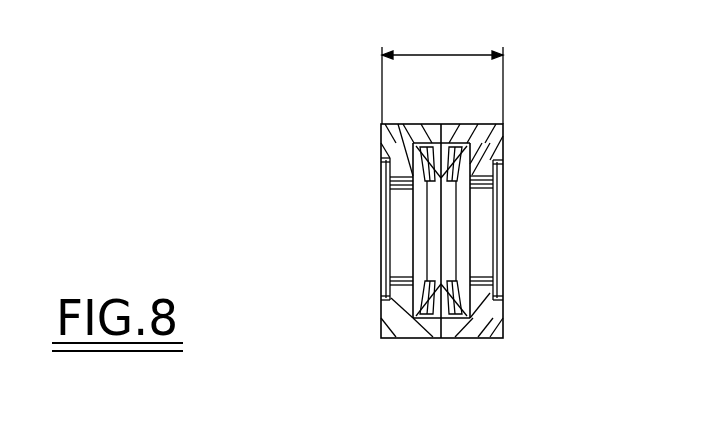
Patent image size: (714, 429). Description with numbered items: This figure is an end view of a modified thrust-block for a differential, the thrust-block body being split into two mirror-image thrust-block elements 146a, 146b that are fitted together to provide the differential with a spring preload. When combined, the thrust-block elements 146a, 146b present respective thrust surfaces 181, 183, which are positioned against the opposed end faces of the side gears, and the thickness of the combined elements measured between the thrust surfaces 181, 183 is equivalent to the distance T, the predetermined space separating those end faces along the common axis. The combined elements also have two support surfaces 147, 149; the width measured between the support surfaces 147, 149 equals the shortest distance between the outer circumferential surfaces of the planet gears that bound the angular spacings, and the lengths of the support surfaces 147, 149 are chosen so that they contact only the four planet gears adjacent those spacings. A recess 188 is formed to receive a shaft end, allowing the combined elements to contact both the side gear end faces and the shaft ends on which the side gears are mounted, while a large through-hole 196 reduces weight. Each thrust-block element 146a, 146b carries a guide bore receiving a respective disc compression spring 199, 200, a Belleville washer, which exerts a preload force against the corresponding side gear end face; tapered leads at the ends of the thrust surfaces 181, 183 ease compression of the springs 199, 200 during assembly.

The distance T is at (465, 54).
The support surface 147 is at (478, 123).
The support surface 149 is at (503, 347).
The thrust-block element 146a is at (498, 137).
The thrust-block element 146b is at (396, 133).
The thrust surface 181 is at (500, 150).
The through-hole 196 is at (420, 192).
The recess 188 is at (494, 282).
The thrust surface 183 is at (381, 299).
The disc compression spring 199 is at (462, 190).
The disc compression spring 200 is at (412, 307).